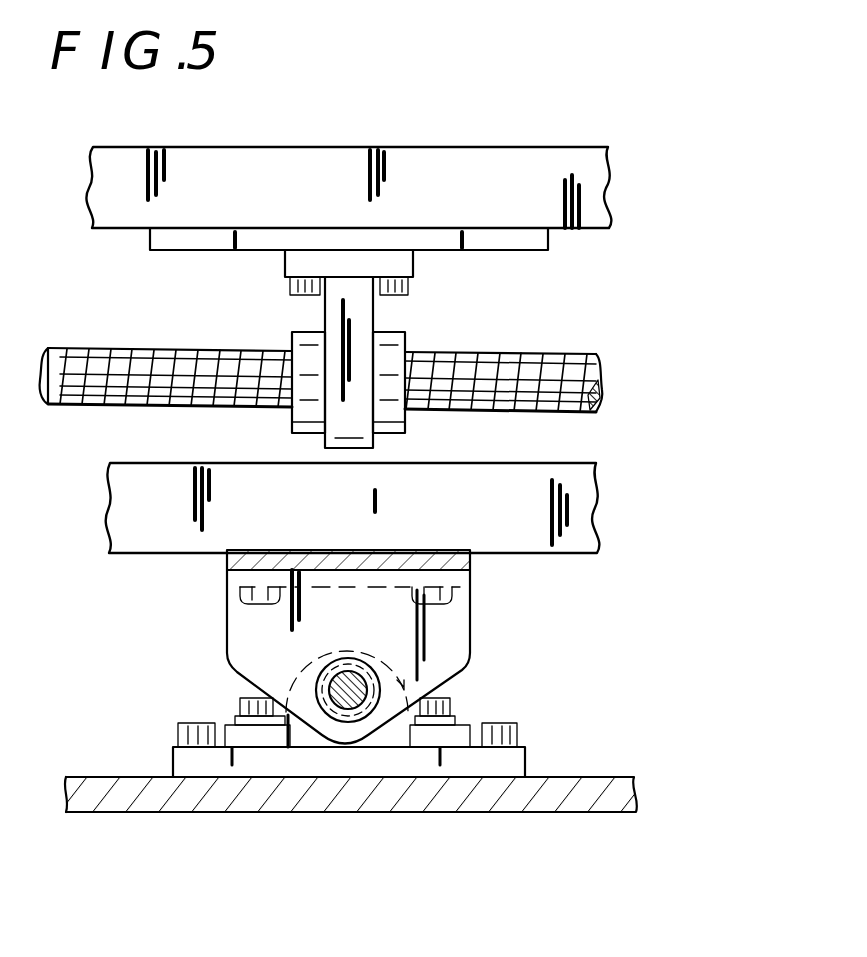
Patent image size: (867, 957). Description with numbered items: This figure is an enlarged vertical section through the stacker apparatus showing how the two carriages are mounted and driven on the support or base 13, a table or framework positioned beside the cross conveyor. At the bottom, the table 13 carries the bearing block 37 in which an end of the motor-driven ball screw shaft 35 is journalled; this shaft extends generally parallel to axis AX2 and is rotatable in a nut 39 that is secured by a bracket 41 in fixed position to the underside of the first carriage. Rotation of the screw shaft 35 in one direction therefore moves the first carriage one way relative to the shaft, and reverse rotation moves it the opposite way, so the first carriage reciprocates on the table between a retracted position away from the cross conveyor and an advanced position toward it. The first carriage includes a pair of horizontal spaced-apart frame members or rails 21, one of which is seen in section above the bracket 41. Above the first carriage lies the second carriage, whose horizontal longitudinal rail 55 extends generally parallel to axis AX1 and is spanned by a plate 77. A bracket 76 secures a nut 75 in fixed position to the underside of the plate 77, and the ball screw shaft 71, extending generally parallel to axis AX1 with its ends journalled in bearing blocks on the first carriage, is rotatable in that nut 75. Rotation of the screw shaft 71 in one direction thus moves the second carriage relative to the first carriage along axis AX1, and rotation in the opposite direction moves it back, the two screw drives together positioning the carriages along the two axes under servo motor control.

The horizontal frame member or rail 55 is at (596, 183).
The plate 77 is at (520, 256).
The bracket 76 is at (322, 302).
The nut 75 is at (397, 331).
The ball screw shaft 71 is at (522, 355).
The horizontal frame member or rail 21 is at (585, 533).
The bracket 41 is at (470, 612).
The ball screw shaft 35 is at (323, 673).
The nut 39 is at (375, 673).
The bearing block 37 is at (455, 688).
The support or base 13 is at (610, 777).